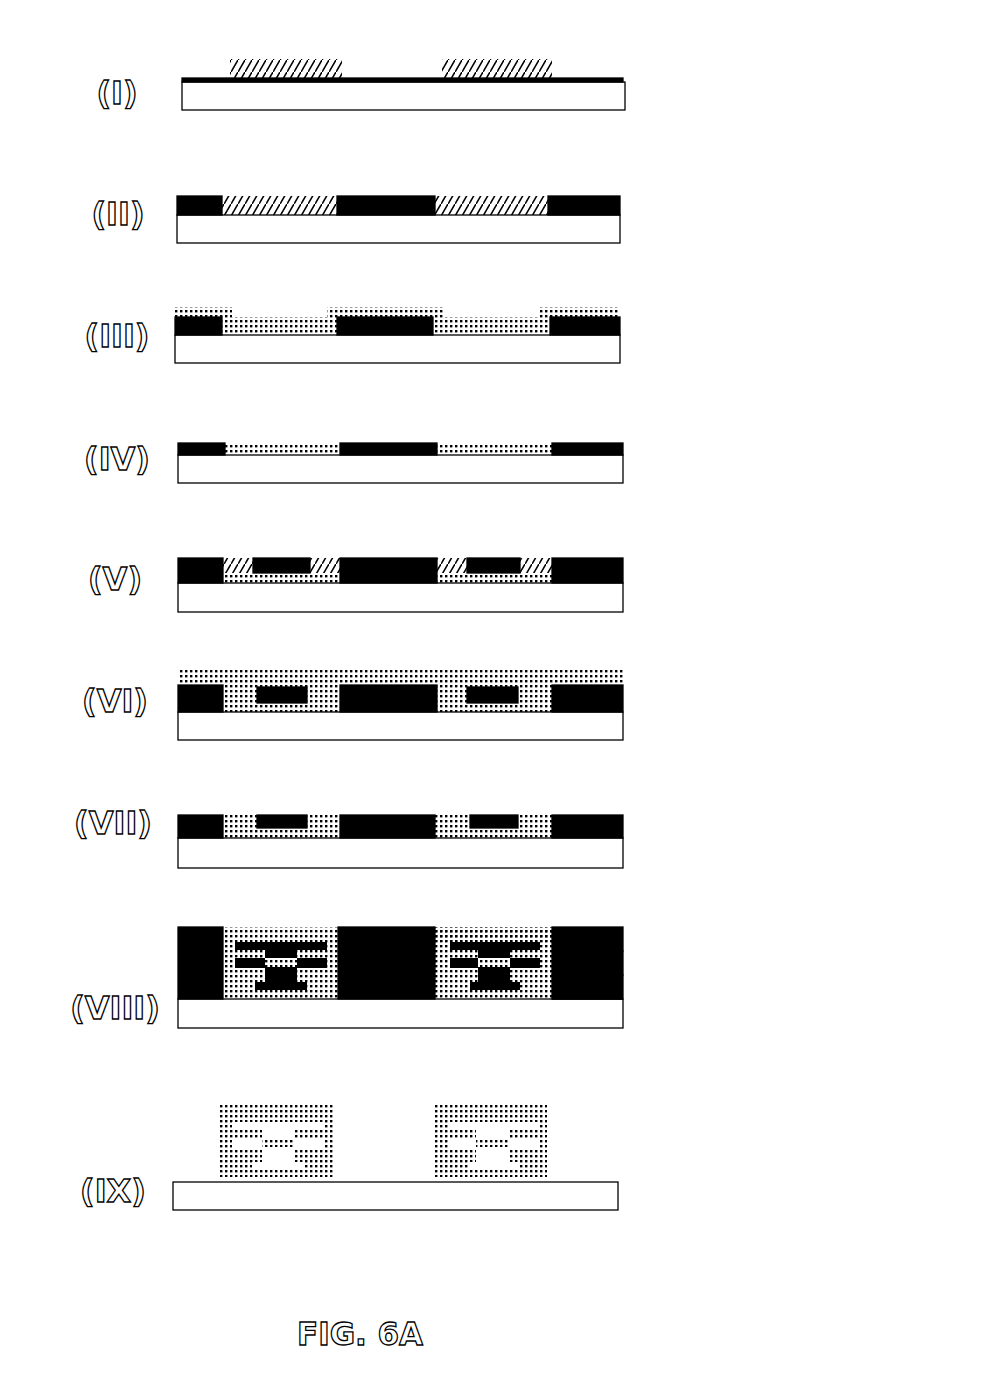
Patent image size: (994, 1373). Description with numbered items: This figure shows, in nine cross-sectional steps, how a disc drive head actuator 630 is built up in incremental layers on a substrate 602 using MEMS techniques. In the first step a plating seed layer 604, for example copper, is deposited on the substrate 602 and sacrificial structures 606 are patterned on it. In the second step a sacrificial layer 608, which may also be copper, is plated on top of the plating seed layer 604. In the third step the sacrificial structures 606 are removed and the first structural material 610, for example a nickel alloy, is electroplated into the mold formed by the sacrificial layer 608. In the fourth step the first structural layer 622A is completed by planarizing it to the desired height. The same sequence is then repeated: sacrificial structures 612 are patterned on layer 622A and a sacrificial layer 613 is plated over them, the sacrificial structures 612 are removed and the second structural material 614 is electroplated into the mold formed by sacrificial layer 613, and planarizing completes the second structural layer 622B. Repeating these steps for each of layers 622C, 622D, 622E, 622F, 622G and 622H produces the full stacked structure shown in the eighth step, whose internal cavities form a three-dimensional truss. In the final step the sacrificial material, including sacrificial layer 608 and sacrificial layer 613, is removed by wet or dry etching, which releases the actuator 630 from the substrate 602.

The substrate 602 is at (617, 104).
The plating seed layer 604 is at (588, 79).
The sacrificial structures 606 is at (482, 77).
The sacrificial layer 608 is at (360, 195).
The structural material 610 is at (423, 312).
The sacrificial structures 612 is at (528, 560).
The sacrificial layer 613 is at (556, 560).
The structural material 614 is at (423, 672).
The layer 622A is at (623, 450).
The layer 622B is at (623, 822).
The layer 622C is at (578, 1001).
The layer 622D is at (623, 981).
The layer 622E is at (623, 955).
The layer 622F is at (623, 930).
The layer 622G is at (549, 945).
The layer 622H is at (547, 935).
The disc drive head actuator 630 is at (558, 1131).